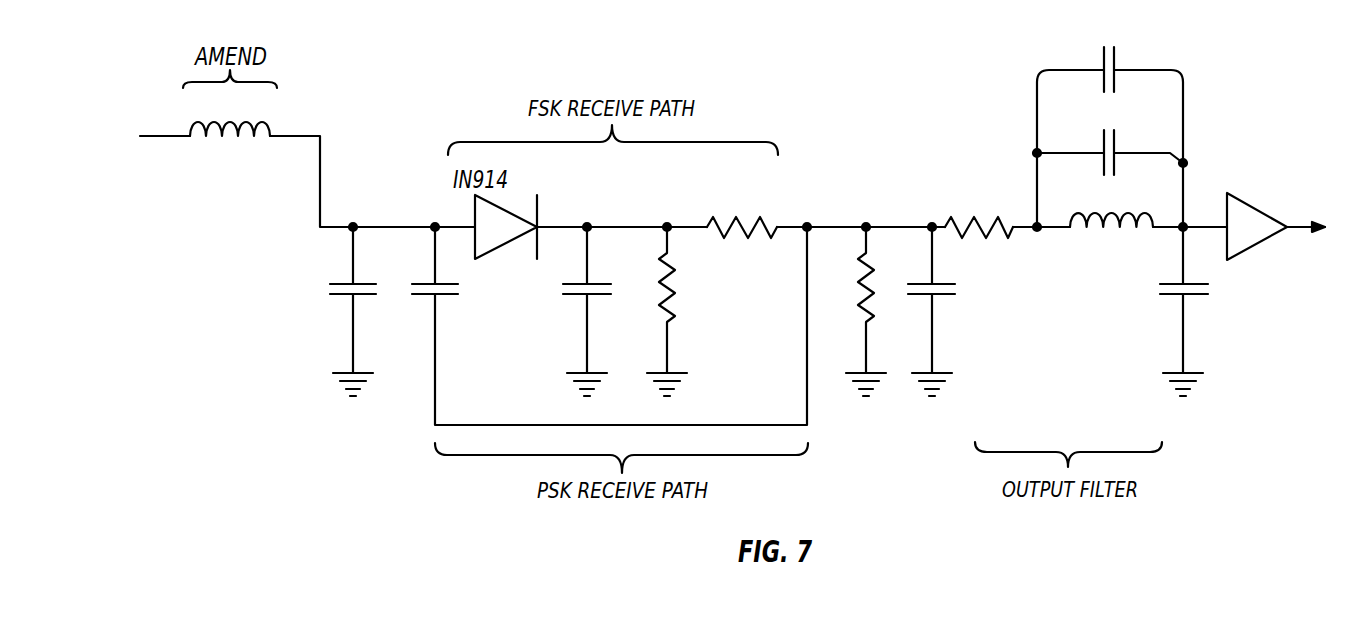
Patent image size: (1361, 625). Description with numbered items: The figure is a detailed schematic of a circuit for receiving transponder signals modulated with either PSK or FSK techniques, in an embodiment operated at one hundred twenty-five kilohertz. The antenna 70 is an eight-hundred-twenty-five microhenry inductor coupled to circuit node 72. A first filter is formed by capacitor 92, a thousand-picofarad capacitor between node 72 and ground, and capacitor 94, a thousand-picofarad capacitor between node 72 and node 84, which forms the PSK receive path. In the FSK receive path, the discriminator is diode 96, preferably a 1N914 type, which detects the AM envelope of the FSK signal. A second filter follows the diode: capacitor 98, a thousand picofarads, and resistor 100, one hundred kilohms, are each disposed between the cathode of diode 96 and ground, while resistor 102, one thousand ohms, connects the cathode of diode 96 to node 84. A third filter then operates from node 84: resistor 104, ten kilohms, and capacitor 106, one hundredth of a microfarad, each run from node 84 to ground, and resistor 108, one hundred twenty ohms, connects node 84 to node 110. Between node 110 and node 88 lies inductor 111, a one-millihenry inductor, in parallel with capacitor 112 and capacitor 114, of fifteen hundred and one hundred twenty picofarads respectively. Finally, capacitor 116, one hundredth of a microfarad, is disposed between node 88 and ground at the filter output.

The antenna 70 is at (190, 128).
The circuit node 72 is at (354, 226).
The node 84 is at (809, 225).
The node 88 is at (1182, 238).
The capacitor 92 is at (346, 283).
The capacitor 94 is at (428, 283).
The diode 96 is at (540, 224).
The capacitor 98 is at (583, 300).
The resistor 100 is at (668, 305).
The resistor 102 is at (710, 215).
The resistor 104 is at (858, 292).
The capacitor 106 is at (940, 283).
The resistor 108 is at (946, 218).
The node 110 is at (1036, 224).
The inductor 111 is at (1120, 212).
The capacitor 112 is at (1105, 140).
The capacitor 114 is at (1105, 55).
The capacitor 116 is at (1175, 296).